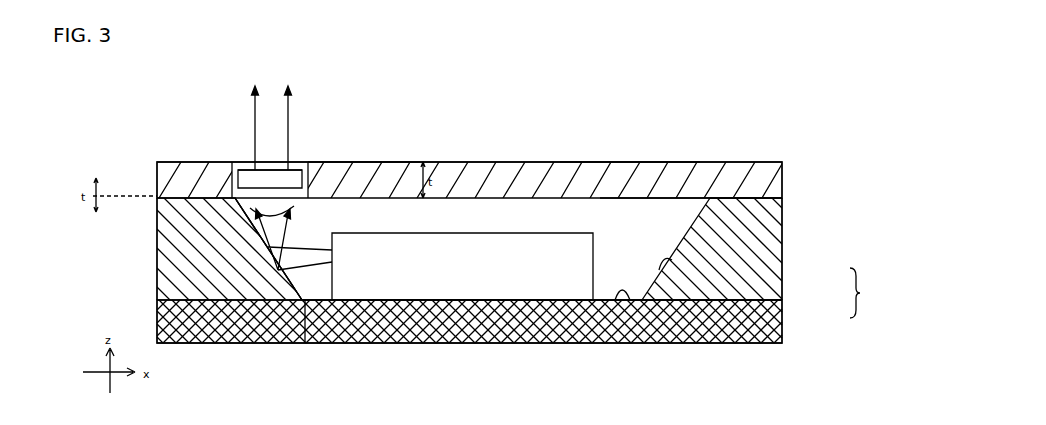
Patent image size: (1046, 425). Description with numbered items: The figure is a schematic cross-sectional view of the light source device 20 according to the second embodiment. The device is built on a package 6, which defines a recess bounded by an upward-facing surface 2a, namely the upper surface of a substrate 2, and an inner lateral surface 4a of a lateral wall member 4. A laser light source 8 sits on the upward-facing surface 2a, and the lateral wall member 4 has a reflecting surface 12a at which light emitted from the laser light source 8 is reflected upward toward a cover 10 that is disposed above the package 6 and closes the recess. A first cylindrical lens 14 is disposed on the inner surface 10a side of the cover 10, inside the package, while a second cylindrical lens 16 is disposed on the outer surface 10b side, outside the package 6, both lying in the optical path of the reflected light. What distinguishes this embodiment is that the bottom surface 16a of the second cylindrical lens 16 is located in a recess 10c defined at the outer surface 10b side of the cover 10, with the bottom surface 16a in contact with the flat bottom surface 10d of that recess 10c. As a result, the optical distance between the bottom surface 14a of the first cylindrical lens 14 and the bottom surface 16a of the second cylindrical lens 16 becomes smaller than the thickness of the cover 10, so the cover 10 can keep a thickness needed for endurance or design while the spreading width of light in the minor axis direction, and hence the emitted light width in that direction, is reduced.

The substrate 2 is at (783, 325).
The upward-facing surface 2a is at (638, 301).
The lateral wall member 4 is at (783, 280).
The inner lateral surface 4a is at (661, 301).
The package 6 is at (862, 293).
The laser light source 8 is at (560, 233).
The cover 10 is at (784, 184).
The inner surface 10a is at (678, 198).
The outer surface 10b is at (621, 161).
The recess 10c is at (318, 161).
The flat bottom surface 10d is at (311, 164).
The reflecting surface 12a is at (306, 344).
The first cylindrical lens 14 is at (278, 270).
The bottom surface of the first cylindrical lens 14a is at (252, 215).
The second cylindrical lens 16 is at (248, 168).
The bottom surface of the second cylindrical lens 16a is at (233, 163).
The light source device 20 is at (767, 153).